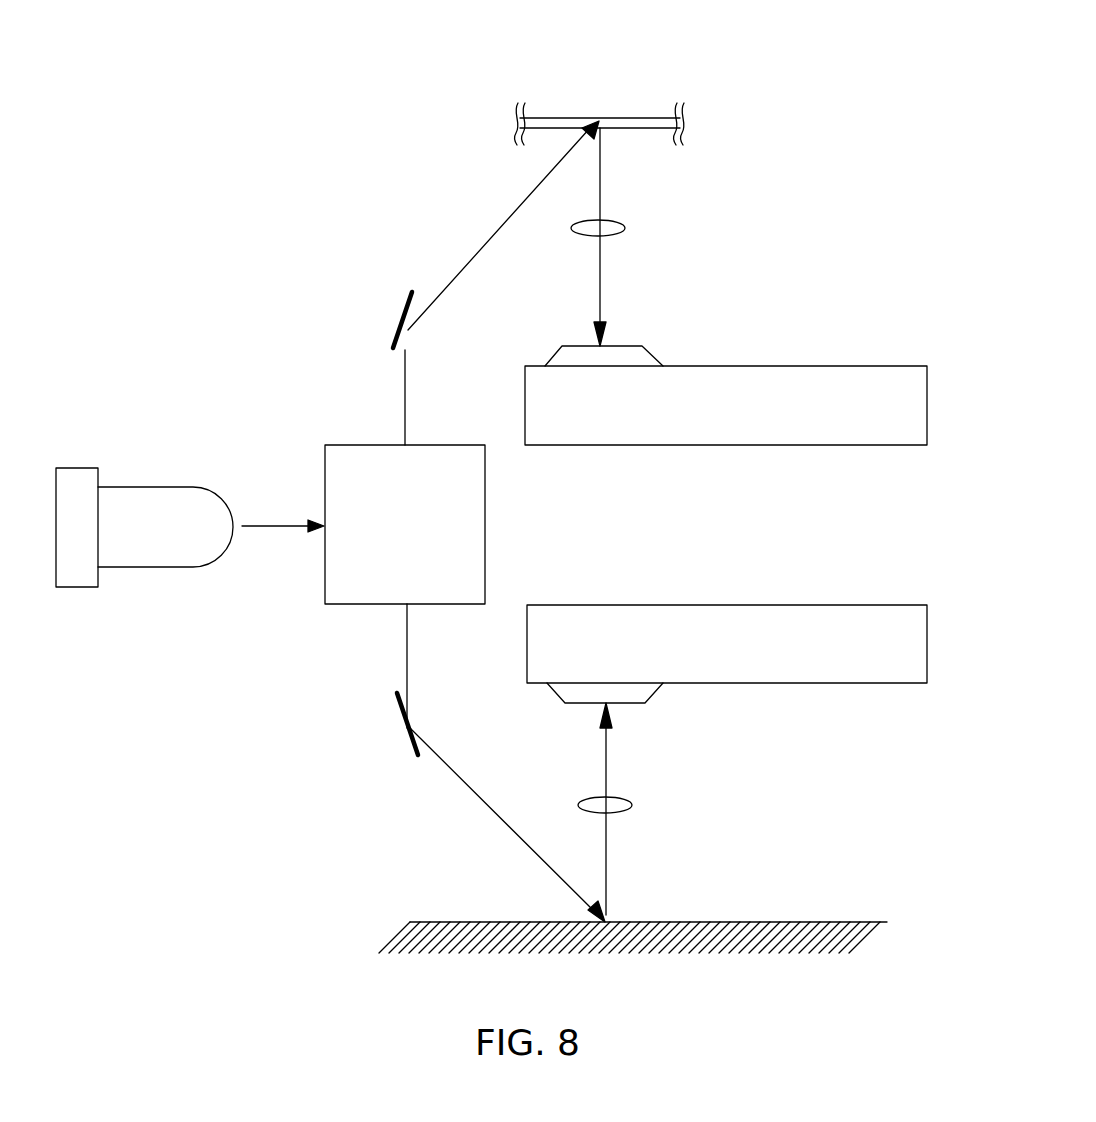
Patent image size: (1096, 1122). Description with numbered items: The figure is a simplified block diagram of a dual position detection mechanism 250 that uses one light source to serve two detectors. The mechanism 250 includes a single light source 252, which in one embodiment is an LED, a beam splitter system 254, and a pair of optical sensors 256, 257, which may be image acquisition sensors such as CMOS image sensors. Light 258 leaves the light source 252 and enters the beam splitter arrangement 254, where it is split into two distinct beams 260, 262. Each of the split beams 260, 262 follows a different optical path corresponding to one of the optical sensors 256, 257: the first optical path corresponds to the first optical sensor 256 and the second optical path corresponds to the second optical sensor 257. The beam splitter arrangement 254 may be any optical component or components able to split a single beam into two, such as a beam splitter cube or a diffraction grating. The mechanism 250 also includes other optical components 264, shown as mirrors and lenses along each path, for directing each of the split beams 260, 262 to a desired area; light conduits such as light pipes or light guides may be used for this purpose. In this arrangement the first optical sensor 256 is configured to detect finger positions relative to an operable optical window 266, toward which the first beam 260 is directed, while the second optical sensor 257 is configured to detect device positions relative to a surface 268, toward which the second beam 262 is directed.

The dual position detection mechanism 250 is at (212, 205).
The light source 252 is at (123, 485).
The beam splitter system 254 is at (346, 607).
The first optical sensor 256 is at (822, 385).
The second optical sensor 257 is at (743, 633).
The light 258 is at (270, 523).
The first split beam 260 is at (405, 407).
The second split beam 262 is at (407, 653).
The optical components 264 is at (412, 288).
The operable optical window 266 is at (630, 118).
The surface 268 is at (698, 922).